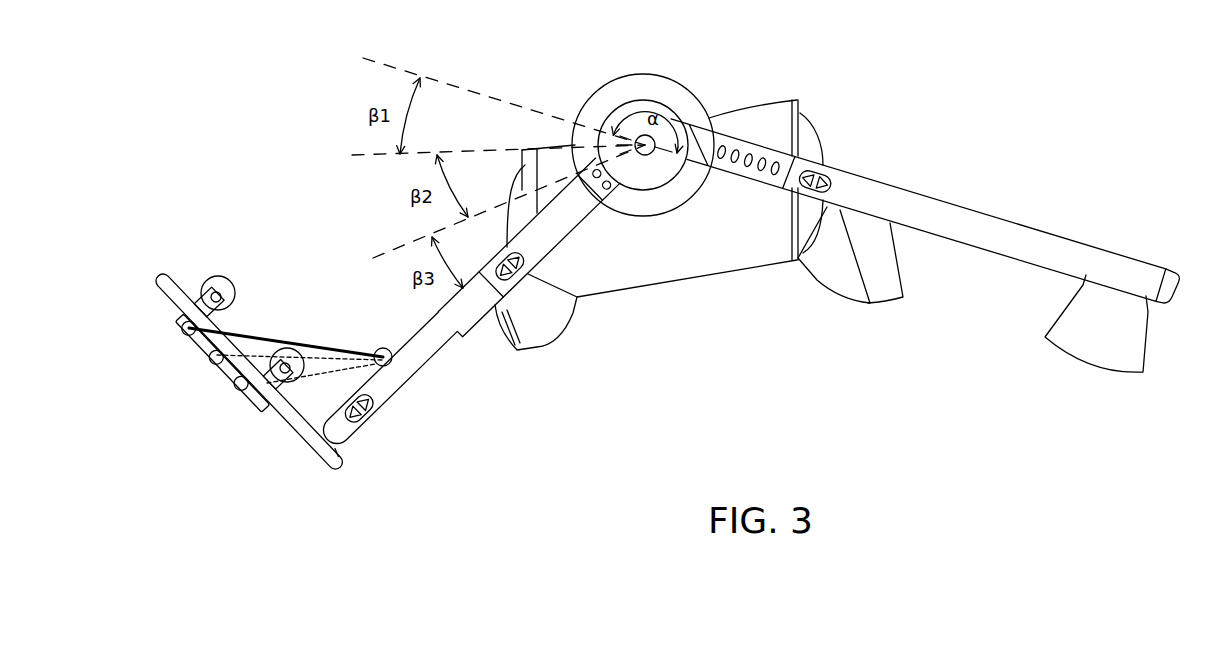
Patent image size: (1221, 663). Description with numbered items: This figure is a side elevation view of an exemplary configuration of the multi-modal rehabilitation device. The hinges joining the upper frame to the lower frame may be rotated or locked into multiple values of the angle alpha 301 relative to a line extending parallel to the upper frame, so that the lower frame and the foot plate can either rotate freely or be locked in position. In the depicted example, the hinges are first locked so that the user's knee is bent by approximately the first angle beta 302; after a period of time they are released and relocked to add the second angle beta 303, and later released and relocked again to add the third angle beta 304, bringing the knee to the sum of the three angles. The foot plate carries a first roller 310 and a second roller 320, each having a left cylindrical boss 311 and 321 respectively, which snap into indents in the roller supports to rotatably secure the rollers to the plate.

The angle α 301 is at (650, 103).
The angle β1 302 is at (365, 115).
The angle β2 303 is at (405, 197).
The angle β3 304 is at (408, 280).
The first roller 310 is at (229, 280).
The left cylindrical boss 311 is at (212, 285).
The second roller 320 is at (296, 351).
The left cylindrical boss 321 is at (284, 358).